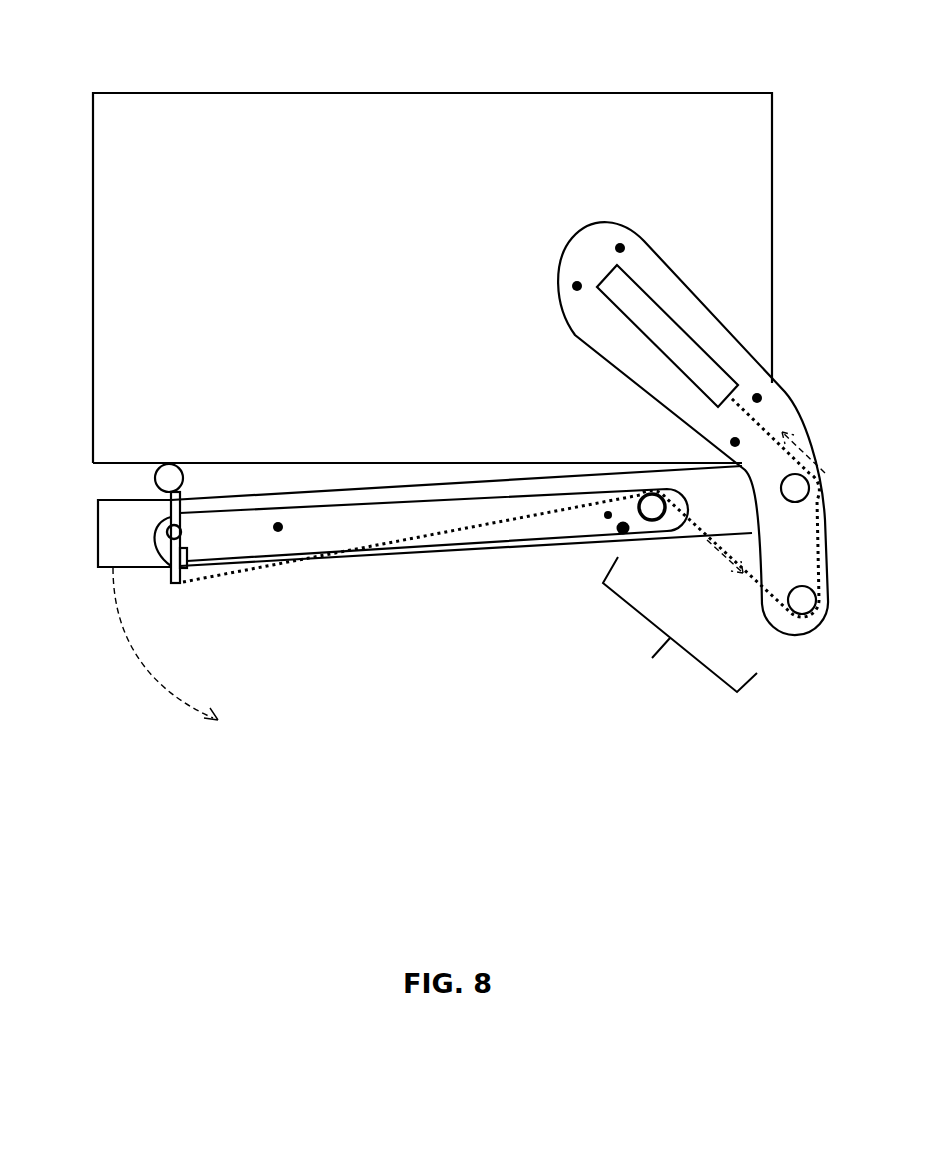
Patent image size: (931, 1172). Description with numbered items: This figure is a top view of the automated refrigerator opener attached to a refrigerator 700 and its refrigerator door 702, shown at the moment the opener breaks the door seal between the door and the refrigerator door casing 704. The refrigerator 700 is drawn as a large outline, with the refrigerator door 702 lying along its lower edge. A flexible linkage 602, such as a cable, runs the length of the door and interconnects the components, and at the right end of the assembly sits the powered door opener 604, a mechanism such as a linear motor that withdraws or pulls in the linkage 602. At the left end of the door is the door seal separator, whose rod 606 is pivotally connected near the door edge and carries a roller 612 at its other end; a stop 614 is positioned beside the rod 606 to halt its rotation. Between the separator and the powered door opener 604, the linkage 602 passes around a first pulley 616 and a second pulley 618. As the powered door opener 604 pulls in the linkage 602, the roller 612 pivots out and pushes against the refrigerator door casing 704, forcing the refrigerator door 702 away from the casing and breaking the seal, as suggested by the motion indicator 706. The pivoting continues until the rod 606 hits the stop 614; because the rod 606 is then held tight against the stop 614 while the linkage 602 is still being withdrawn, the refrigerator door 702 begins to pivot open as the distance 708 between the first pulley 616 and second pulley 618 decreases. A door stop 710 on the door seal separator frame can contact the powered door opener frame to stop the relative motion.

The refrigerator 700 is at (257, 118).
The refrigerator door 702 is at (98, 528).
The refrigerator door casing 704 is at (127, 464).
The linkage 602 is at (232, 578).
The powered door opener 604 is at (663, 325).
The rod 606 is at (173, 581).
The roller 612 is at (169, 478).
The stop 614 is at (187, 561).
The first pulley 616 is at (652, 493).
The second pulley 618 is at (802, 602).
The motion direction 706 is at (162, 688).
The distance 708 is at (676, 636).
The door stop 710 is at (620, 530).